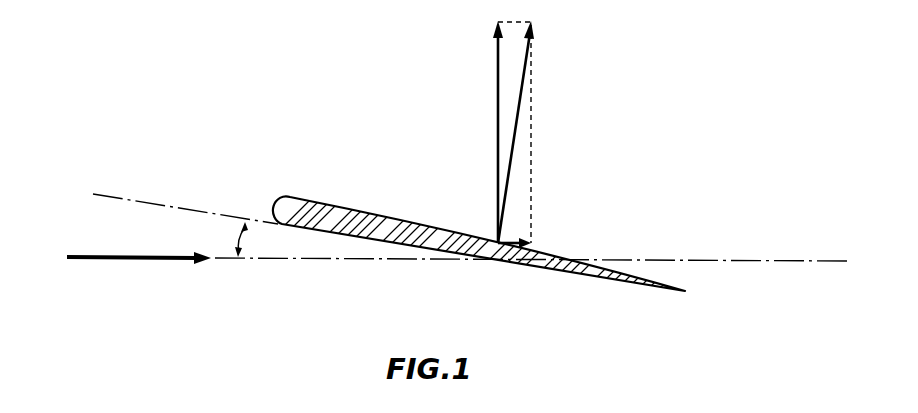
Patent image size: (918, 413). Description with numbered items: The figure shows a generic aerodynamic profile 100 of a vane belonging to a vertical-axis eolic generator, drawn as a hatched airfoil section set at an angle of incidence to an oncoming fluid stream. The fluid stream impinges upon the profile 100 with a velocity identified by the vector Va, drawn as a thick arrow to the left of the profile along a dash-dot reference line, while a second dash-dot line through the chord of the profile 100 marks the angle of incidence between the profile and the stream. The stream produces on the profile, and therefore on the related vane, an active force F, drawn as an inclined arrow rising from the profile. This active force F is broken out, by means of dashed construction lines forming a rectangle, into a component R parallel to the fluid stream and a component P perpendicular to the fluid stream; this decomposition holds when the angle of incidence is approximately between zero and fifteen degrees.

The profile 100 is at (307, 197).
The component perpendicular to the fluid stream P is at (486, 132).
The active force F is at (525, 132).
The component parallel to the fluid stream R is at (523, 243).
The fluid stream velocity vector Va is at (139, 271).